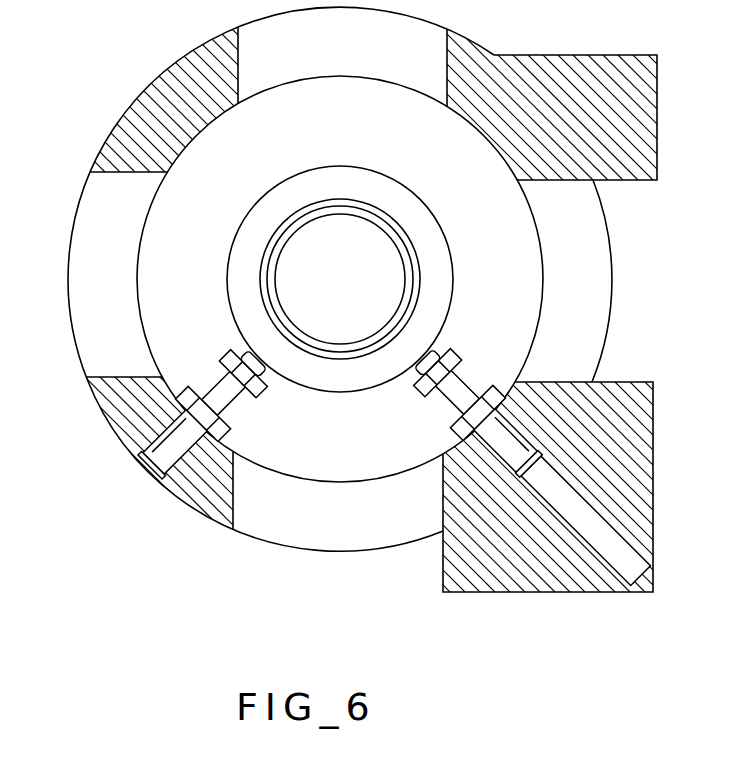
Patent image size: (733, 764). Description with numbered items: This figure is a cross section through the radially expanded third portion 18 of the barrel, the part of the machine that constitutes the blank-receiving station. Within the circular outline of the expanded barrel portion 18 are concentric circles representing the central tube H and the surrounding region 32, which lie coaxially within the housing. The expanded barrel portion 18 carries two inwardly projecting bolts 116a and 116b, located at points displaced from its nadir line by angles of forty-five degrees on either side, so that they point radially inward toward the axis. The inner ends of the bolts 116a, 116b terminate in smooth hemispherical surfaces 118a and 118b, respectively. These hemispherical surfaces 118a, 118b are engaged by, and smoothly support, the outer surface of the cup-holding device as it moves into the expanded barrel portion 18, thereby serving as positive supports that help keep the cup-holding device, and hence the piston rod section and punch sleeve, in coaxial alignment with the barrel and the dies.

The radially expanded third portion 18 is at (478, 50).
The annular chamber 32 is at (445, 257).
The tube H is at (426, 235).
The inwardly projecting bolt 116a is at (220, 404).
The inwardly projecting bolt 116b is at (515, 461).
The smooth hemispherical surface 118a is at (259, 360).
The smooth hemispherical surface 118b is at (440, 404).